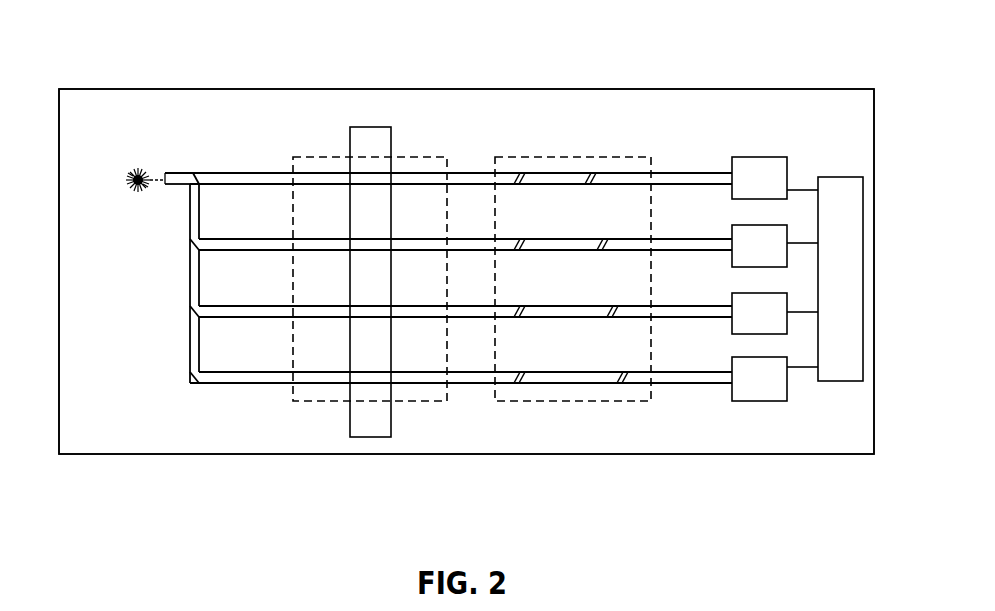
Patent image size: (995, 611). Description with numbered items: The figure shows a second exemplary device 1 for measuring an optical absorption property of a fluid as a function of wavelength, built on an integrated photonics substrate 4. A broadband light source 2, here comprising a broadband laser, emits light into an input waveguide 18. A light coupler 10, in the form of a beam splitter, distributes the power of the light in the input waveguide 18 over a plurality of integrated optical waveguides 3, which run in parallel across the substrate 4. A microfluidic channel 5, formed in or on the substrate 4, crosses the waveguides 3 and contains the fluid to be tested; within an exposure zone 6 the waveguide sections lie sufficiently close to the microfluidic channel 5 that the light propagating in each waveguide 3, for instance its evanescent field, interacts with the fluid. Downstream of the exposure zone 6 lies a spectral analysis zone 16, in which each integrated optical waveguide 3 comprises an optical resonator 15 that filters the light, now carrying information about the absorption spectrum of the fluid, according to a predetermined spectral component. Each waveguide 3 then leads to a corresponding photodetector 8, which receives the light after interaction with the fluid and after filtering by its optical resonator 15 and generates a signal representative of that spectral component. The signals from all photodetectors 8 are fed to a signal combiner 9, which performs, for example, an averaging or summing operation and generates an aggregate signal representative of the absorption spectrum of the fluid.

The device 1 is at (244, 75).
The broadband light source 2 is at (133, 210).
The integrated optical waveguides 3 is at (466, 318).
The integrated photonics substrate 4 is at (72, 453).
The microfluidic channel 5 is at (357, 437).
The exposure zone 6 is at (423, 401).
The photodetectors 8 is at (743, 318).
The signal combiner 9 is at (837, 381).
The light coupler 10 is at (176, 304).
The optical resonator 15 is at (555, 240).
The spectral analysis zone 16 is at (624, 401).
The input waveguide 18 is at (176, 171).